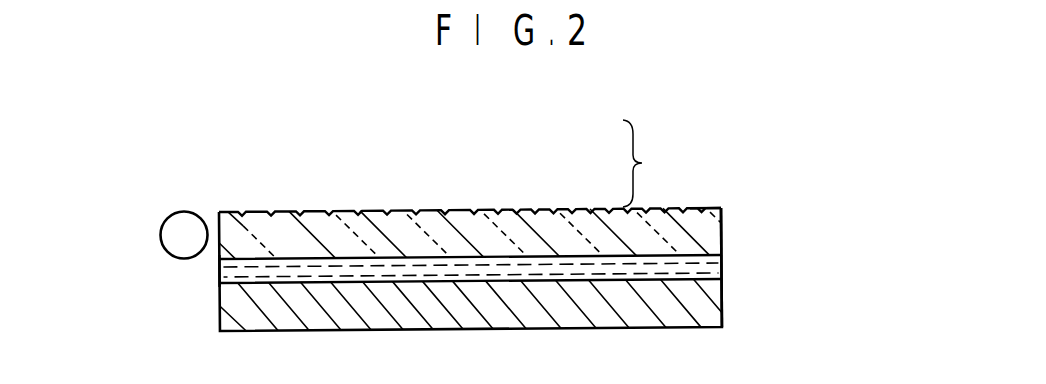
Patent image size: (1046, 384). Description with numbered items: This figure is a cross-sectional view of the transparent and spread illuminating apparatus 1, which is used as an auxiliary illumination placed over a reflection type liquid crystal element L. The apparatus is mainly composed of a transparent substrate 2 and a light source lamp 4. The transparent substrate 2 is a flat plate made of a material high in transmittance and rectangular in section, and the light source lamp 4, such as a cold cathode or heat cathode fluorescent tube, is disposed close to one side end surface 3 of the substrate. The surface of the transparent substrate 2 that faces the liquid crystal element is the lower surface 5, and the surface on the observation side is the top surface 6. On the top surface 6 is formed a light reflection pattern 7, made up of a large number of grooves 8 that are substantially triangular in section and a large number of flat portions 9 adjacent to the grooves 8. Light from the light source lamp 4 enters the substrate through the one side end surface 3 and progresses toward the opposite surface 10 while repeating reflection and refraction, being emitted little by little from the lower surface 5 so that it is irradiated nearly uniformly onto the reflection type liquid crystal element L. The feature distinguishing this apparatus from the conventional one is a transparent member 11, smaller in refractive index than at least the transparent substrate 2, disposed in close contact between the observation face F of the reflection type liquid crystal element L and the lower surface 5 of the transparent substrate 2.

The transparent and spread illuminating apparatus 1 is at (219, 209).
The transparent substrate 2 is at (505, 236).
The one side end surface 3 is at (218, 253).
The light source lamp 4 is at (172, 230).
The lower surface 5 is at (582, 254).
The top surface 6 is at (705, 208).
The light reflection pattern 7 is at (647, 163).
The grooves 8 is at (556, 208).
The flat portions 9 is at (593, 184).
The opposite surface 10 is at (720, 237).
The transparent member 11 is at (372, 272).
The observation face F is at (692, 277).
The reflection type liquid crystal element L is at (462, 302).